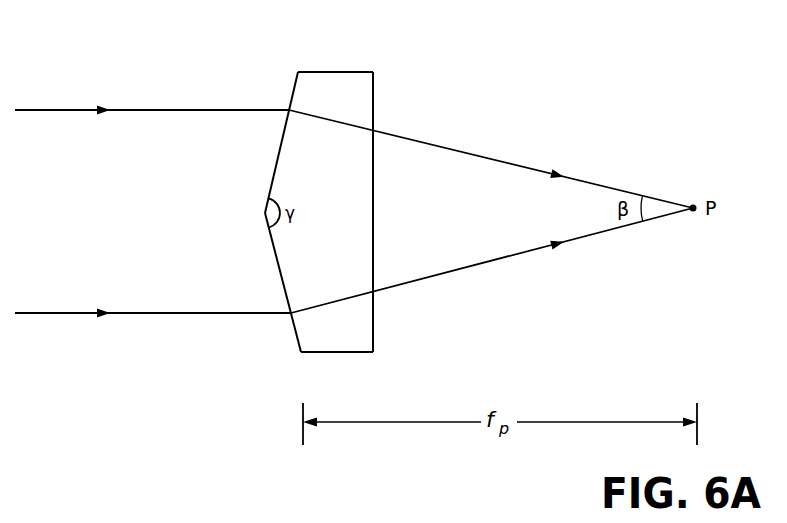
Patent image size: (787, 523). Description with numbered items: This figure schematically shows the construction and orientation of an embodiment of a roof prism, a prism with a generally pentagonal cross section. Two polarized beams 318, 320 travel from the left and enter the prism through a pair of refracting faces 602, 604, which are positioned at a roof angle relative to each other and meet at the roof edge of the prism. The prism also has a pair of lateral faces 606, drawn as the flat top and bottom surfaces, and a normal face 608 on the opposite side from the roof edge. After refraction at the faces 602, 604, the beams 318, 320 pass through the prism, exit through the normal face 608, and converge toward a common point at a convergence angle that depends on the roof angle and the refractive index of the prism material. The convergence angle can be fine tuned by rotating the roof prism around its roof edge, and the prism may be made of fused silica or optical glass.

The polarized beam 318 is at (160, 108).
The polarized beam 320 is at (42, 315).
The refracting face 602 is at (291, 94).
The refracting face 604 is at (297, 342).
The lateral faces 606 is at (335, 70).
The normal face 608 is at (375, 94).